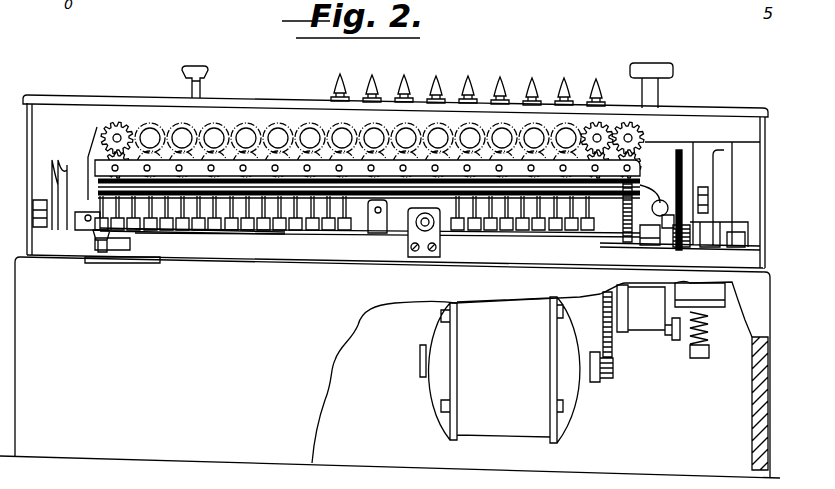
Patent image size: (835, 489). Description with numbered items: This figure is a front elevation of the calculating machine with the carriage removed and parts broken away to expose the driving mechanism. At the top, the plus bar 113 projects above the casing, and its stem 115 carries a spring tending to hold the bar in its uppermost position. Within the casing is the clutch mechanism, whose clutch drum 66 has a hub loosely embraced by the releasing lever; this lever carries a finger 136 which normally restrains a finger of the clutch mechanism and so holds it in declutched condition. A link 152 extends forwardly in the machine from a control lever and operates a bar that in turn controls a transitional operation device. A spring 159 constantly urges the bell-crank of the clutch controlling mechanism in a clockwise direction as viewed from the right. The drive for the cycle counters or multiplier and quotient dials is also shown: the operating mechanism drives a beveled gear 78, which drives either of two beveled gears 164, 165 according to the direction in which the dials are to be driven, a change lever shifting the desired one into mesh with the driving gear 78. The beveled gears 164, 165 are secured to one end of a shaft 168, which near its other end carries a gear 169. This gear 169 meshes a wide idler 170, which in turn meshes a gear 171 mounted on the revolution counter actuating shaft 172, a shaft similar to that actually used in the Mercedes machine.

The plus bar 113 is at (640, 63).
The stem 115 is at (650, 92).
The revolution counter actuating shaft 172 is at (30, 127).
The link 152 is at (58, 172).
The spring 159 is at (676, 157).
The gear 171 is at (646, 192).
The beveled gear 78 is at (709, 226).
The wide idler 170 is at (622, 216).
The shaft 168 is at (650, 238).
The beveled gear 165 is at (680, 247).
The beveled gear 164 is at (712, 243).
The gear 169 is at (606, 329).
The clutch drum 66 is at (700, 320).
The finger 136 is at (750, 310).